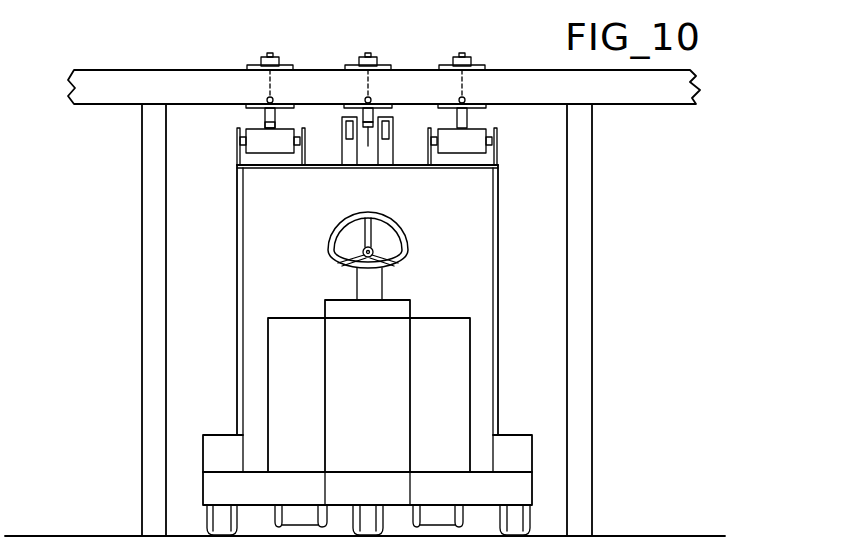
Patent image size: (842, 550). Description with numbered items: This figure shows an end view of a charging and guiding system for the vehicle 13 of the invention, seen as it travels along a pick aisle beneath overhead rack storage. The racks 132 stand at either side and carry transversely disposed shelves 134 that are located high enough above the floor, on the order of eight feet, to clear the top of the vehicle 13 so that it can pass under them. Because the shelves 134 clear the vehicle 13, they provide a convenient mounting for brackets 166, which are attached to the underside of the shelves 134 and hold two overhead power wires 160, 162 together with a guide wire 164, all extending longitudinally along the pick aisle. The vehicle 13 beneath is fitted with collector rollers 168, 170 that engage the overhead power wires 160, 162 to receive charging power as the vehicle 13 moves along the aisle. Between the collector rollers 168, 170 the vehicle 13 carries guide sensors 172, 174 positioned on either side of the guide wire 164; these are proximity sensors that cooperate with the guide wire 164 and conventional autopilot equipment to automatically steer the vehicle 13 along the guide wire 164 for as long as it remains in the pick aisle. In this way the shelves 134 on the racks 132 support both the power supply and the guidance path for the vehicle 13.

The vehicle 13 is at (510, 318).
The racks 132 is at (148, 233).
The shelves 134 is at (152, 85).
The overhead power wire 160 is at (276, 128).
The overhead power wire 162 is at (468, 126).
The guide wire 164 is at (368, 110).
The brackets 166 is at (265, 118).
The collector roller 168 is at (273, 145).
The collector roller 170 is at (466, 148).
The guide sensor 172 is at (352, 142).
The guide sensor 174 is at (384, 142).